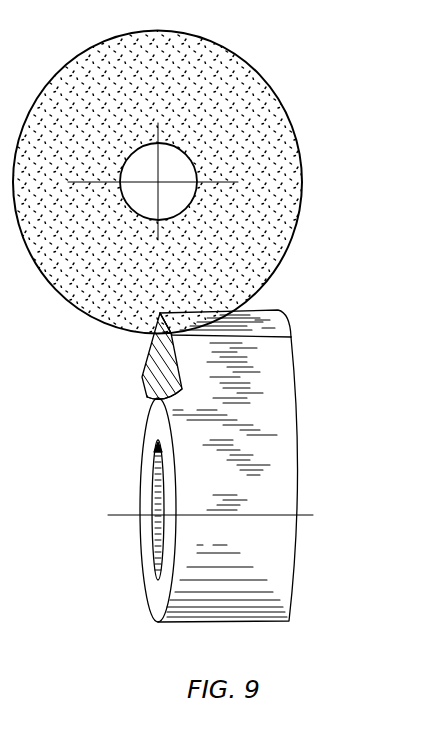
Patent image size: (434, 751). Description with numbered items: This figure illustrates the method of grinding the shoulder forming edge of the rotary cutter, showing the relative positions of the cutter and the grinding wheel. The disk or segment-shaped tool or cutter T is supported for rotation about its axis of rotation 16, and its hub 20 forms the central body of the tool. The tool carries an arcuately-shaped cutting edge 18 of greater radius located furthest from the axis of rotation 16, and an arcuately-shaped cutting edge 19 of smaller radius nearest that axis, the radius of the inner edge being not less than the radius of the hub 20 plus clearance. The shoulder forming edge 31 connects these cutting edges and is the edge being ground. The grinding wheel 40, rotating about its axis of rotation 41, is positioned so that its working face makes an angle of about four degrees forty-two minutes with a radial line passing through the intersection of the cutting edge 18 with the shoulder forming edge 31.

The grinding wheel 40 is at (296, 174).
The axis of rotation of the grinding wheel 41 is at (159, 182).
The arcuately-shaped cutting edge 18 is at (158, 332).
The arcuately-shaped cutting edge 19 is at (147, 358).
The shoulder forming edge 31 is at (145, 392).
The axis of rotation of the tool 16 is at (118, 514).
The hub 20 is at (157, 597).
The tool or cutter T is at (283, 401).